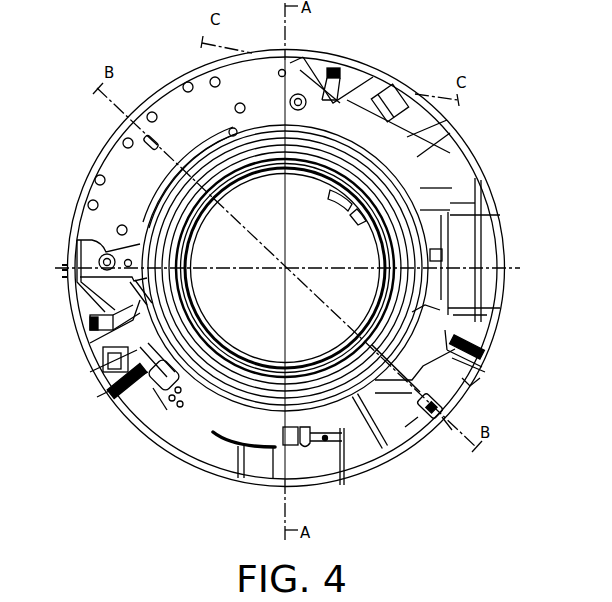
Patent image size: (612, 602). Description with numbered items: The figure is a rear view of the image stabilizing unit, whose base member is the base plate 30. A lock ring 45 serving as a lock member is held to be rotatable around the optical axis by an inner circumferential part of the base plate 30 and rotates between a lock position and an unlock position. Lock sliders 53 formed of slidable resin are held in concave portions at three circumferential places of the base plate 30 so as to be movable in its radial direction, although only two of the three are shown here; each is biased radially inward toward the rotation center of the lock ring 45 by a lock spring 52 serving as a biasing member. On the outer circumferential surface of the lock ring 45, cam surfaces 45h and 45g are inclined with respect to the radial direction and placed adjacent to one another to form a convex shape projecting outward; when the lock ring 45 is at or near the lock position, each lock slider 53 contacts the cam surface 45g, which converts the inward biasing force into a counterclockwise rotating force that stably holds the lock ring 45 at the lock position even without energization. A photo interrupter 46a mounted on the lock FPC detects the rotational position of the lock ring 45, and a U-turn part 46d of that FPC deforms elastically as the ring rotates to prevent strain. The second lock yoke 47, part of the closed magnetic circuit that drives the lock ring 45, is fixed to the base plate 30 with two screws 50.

The base plate 30 is at (500, 226).
The lock ring 45 is at (409, 230).
The cam surface 45g is at (150, 347).
The cam surface 45h is at (425, 318).
The photo interrupter 46a is at (310, 449).
The U-turn part 46d is at (236, 450).
The second lock yoke 47 is at (170, 100).
The screws 50 is at (87, 240).
The lock spring 52 is at (120, 413).
The lock slider 53 is at (135, 398).